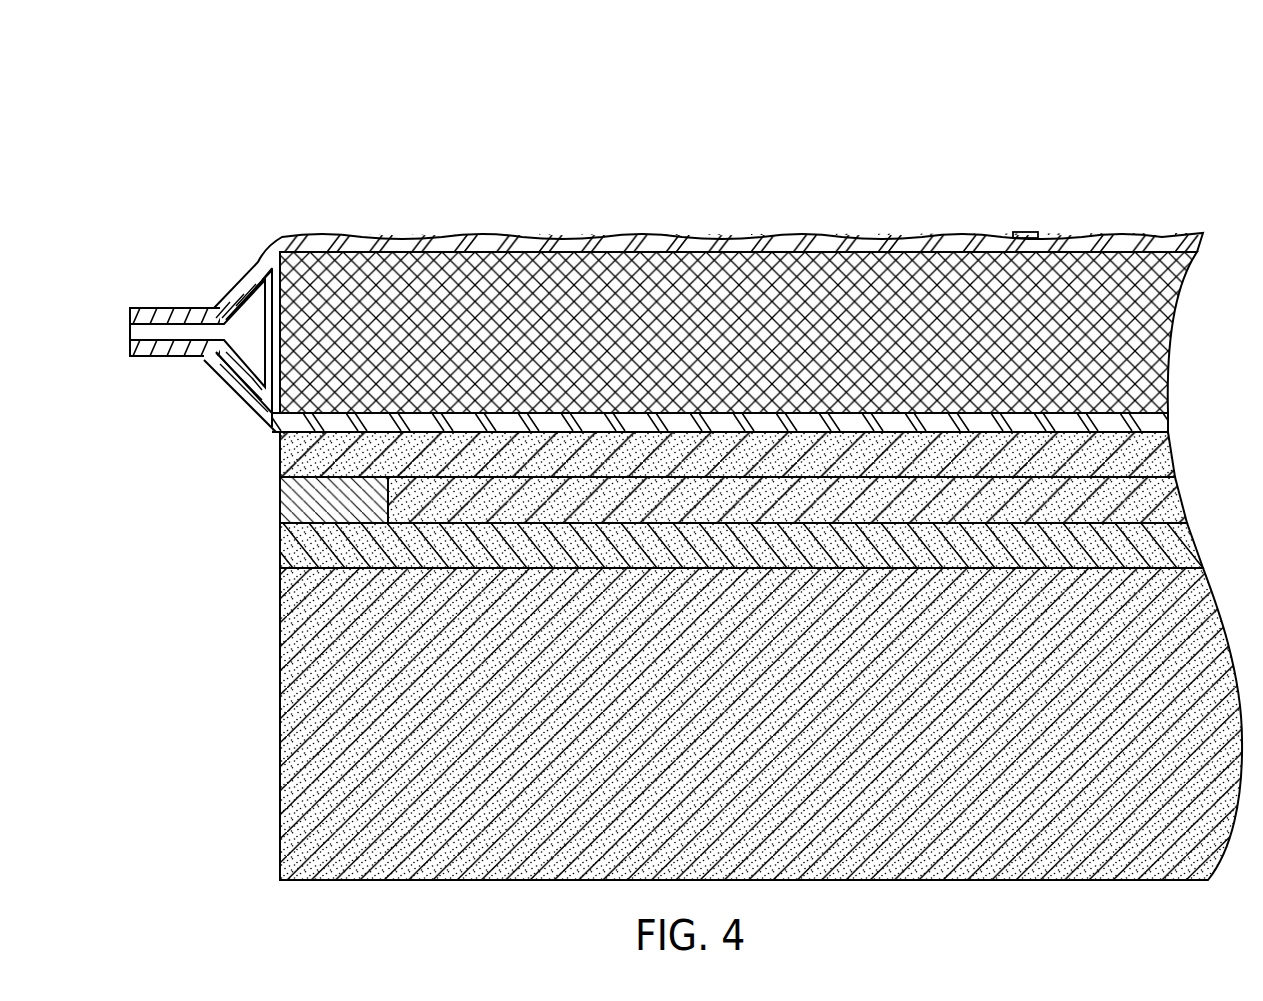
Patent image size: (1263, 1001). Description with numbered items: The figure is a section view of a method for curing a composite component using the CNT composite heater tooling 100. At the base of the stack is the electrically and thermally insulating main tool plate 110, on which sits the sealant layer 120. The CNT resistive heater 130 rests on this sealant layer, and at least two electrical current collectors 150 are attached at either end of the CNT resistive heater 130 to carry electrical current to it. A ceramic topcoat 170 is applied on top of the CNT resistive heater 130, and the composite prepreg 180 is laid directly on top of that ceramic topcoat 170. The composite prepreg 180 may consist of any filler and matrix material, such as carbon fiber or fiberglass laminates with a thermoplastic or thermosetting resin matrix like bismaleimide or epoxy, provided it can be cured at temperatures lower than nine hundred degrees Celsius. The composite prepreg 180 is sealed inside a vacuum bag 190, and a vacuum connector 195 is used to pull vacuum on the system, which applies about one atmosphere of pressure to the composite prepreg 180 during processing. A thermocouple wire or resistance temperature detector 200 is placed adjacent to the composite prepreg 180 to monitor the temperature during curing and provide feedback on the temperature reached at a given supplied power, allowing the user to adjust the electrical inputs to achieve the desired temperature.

The CNT composite heater tooling 100 is at (258, 118).
The main tool plate 110 is at (283, 727).
The sealant layer 120 is at (288, 543).
The CNT resistive heater 130 is at (1167, 500).
The electrical current collectors 150 is at (287, 497).
The ceramic topcoat 170 is at (297, 451).
The composite prepreg 180 is at (1143, 332).
The vacuum bag 190 is at (398, 245).
The vacuum connector 195 is at (170, 308).
The thermocouple wire or resistance temperature detector (RTD) 200 is at (1025, 232).